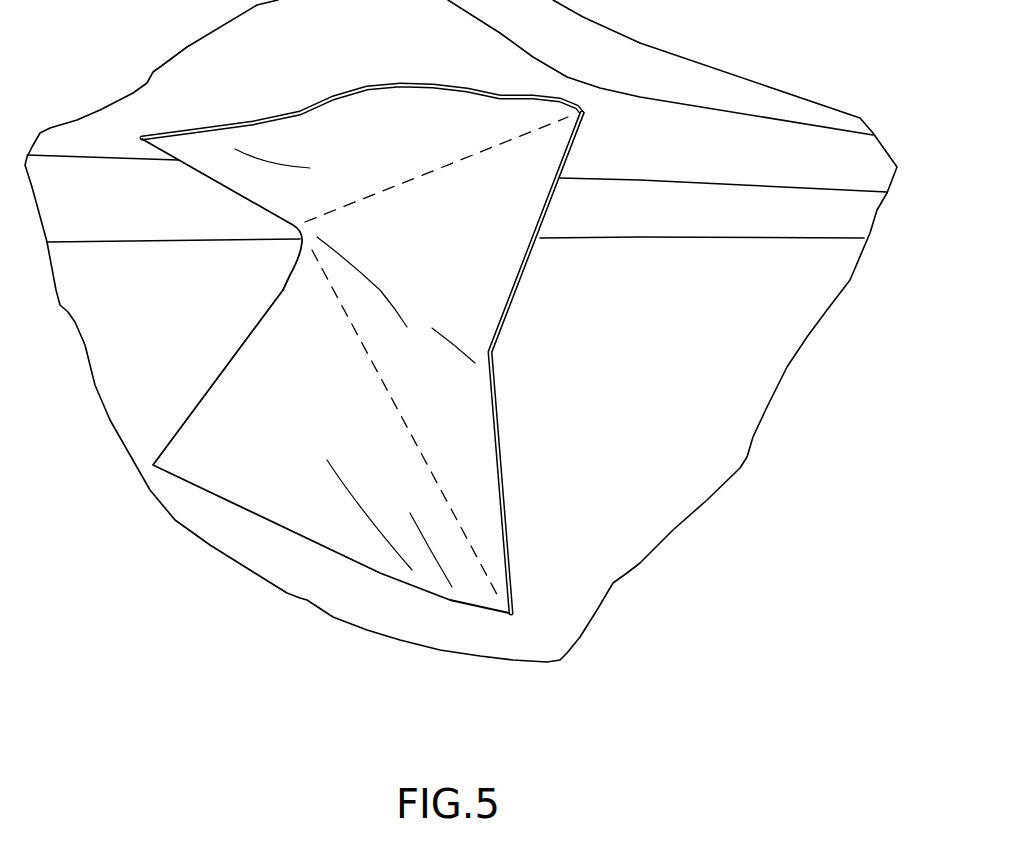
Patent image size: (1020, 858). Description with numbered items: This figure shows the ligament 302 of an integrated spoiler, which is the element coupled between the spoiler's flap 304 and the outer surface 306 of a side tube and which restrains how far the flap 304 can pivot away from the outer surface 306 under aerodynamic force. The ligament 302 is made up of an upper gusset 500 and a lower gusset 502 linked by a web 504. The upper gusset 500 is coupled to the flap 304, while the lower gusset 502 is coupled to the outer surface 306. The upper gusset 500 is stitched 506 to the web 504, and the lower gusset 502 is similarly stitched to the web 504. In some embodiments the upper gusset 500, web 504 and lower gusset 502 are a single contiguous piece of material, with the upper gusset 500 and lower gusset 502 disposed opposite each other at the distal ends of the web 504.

The ligament 302 is at (510, 363).
The flap 304 is at (787, 163).
The outer surface 306 is at (658, 477).
The upper gusset 500 is at (337, 147).
The lower gusset 502 is at (300, 417).
The web 504 is at (500, 302).
The stitching 506 is at (462, 160).